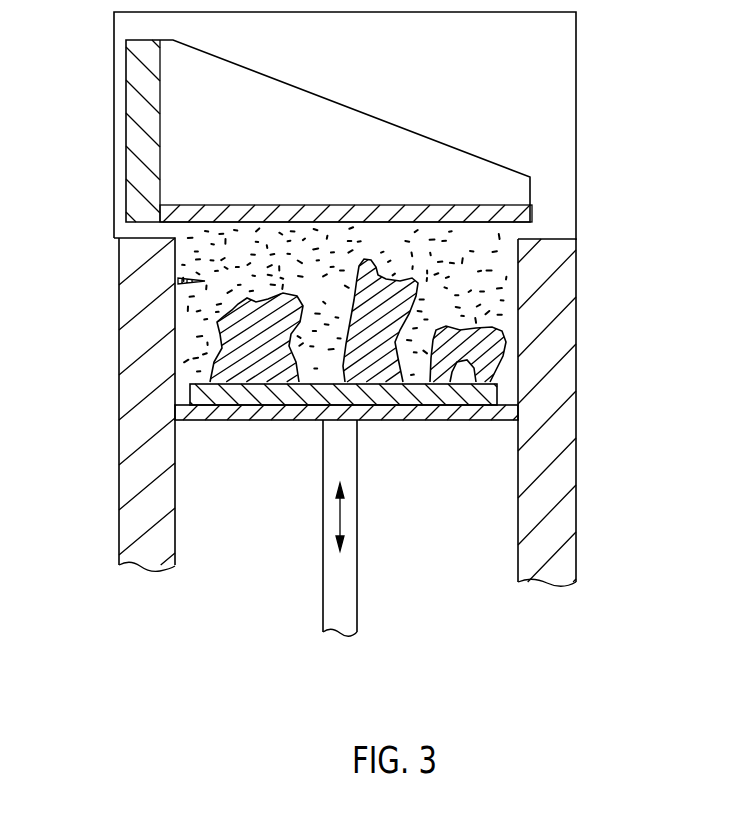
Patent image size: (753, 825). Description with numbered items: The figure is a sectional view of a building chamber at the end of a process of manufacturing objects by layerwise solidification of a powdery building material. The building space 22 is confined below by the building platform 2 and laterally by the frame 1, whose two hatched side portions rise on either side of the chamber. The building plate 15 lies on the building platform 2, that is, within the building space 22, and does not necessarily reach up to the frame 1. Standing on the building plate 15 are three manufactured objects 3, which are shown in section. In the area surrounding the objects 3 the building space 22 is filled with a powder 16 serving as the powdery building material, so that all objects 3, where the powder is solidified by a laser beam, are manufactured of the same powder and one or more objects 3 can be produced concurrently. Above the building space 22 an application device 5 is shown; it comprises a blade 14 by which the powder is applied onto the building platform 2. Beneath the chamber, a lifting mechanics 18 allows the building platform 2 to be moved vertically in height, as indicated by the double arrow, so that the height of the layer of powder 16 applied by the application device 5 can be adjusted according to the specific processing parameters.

The frame 1 is at (145, 468).
The building platform 2 is at (516, 413).
The manufactured objects 3 is at (247, 340).
The application device 5 is at (427, 165).
The blade 14 is at (517, 213).
The building plate 15 is at (490, 395).
The powder 16 is at (477, 297).
The lifting mechanics 18 is at (333, 517).
The building space 22 is at (178, 281).